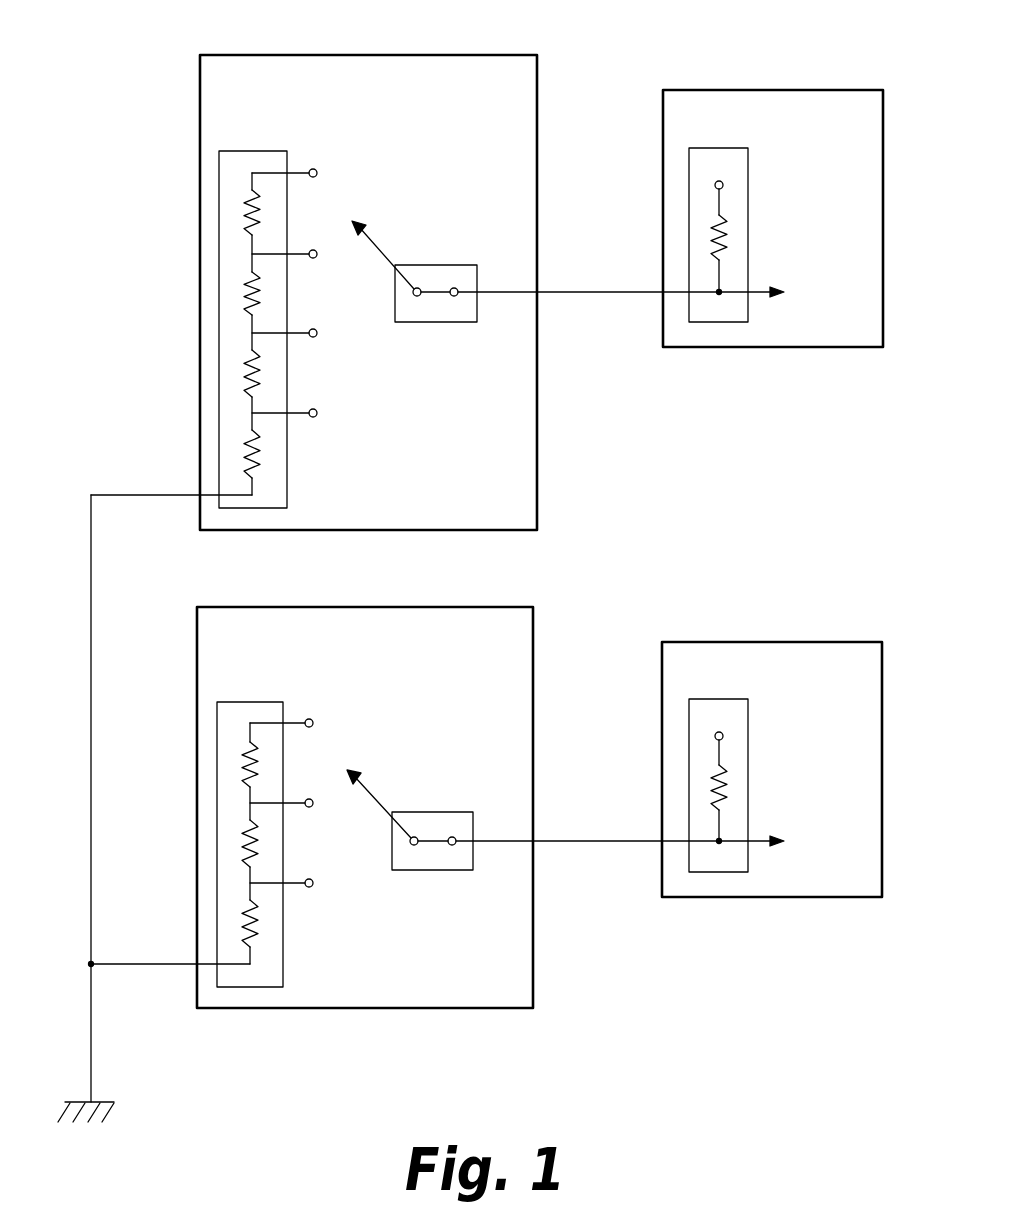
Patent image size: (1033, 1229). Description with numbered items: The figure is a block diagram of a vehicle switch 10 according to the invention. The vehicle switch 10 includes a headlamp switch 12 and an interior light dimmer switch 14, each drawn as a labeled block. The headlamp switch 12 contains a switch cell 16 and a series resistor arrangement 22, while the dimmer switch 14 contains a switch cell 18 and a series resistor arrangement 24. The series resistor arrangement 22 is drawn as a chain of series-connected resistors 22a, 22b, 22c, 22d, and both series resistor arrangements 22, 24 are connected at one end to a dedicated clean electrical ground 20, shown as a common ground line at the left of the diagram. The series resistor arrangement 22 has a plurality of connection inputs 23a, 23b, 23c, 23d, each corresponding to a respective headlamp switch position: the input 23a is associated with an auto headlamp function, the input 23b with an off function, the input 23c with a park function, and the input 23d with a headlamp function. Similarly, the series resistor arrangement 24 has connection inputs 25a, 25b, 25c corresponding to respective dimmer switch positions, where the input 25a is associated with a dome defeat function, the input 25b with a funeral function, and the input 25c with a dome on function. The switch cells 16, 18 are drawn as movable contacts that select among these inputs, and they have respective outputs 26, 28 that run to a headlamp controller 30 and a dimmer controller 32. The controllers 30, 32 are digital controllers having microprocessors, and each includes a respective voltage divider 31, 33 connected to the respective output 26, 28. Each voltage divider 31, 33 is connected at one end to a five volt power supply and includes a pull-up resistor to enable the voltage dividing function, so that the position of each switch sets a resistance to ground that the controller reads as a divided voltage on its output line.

The vehicle switch 10 is at (138, 92).
The headlamp switch 12 is at (537, 100).
The interior light dimmer switch 14 is at (533, 650).
The switch cell 16 is at (435, 322).
The switch cell 18 is at (432, 870).
The dedicated clean electrical ground 20 is at (92, 1037).
The series resistor arrangement 22 is at (253, 151).
The resistor 22a is at (250, 219).
The resistor 22b is at (250, 298).
The resistor 22c is at (250, 378).
The resistor 22d is at (250, 458).
The connection input 23a is at (317, 171).
The connection input 23b is at (313, 258).
The connection input 23c is at (313, 337).
The connection input 23d is at (313, 417).
The series resistor arrangement 24 is at (250, 702).
The connection input 25a is at (313, 721).
The connection input 25b is at (309, 807).
The connection input 25c is at (309, 887).
The output 26 is at (598, 294).
The output 28 is at (598, 843).
The headlamp controller 30 is at (803, 347).
The voltage divider 31 is at (748, 220).
The dimmer controller 32 is at (803, 897).
The voltage divider 33 is at (748, 758).